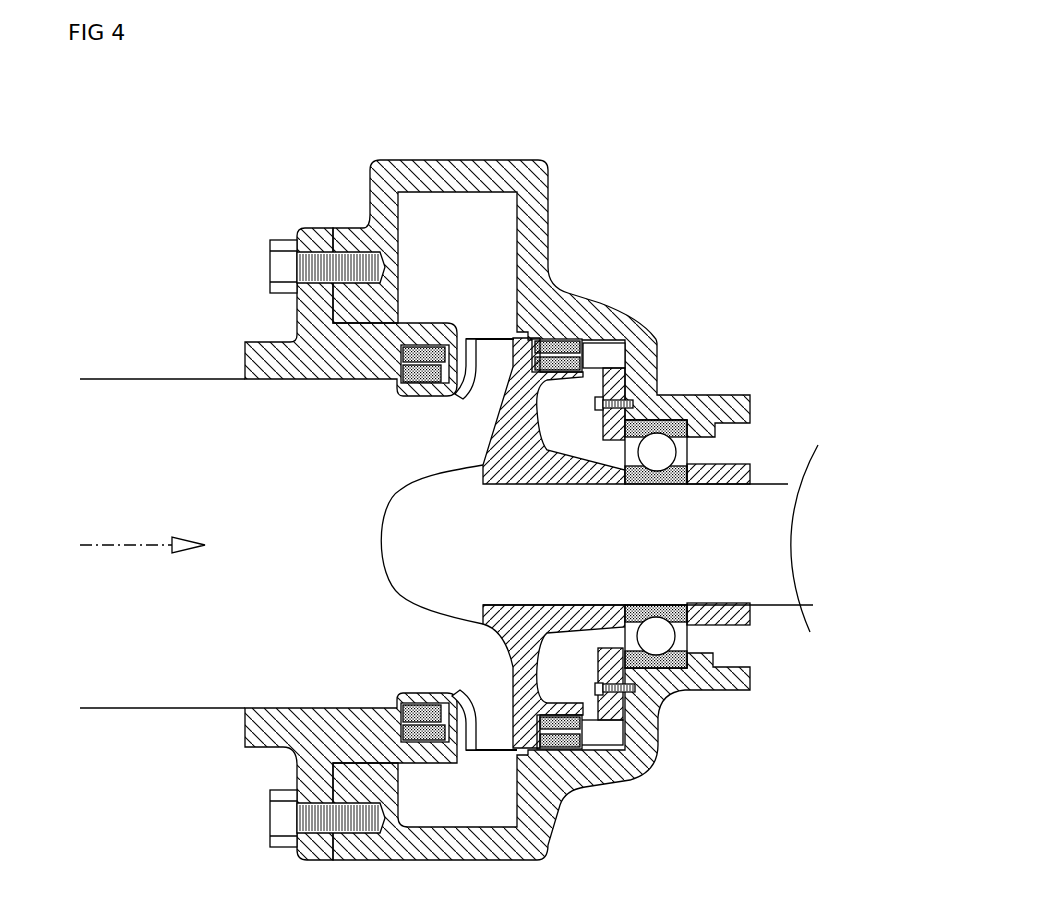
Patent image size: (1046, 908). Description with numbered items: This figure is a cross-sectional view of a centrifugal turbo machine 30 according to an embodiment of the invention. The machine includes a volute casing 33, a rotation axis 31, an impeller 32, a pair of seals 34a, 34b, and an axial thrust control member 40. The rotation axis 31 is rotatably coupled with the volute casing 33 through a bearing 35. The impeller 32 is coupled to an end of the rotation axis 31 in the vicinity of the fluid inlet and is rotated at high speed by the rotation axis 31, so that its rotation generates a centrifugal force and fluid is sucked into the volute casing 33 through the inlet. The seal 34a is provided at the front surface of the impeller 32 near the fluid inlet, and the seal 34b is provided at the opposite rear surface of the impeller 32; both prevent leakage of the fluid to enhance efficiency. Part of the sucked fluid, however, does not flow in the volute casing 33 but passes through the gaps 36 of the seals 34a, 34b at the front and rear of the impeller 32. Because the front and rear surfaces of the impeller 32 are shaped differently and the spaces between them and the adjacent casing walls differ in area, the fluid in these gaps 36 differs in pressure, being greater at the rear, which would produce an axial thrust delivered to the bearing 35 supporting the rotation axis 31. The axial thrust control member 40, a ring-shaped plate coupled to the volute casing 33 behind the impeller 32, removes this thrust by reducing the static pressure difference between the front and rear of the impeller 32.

The centrifugal turbo machine 30 is at (612, 210).
The rotation axis 31 is at (768, 543).
The impeller 32 is at (415, 396).
The volute casing 33 is at (465, 168).
The seal 34a is at (397, 381).
The seal 34b is at (570, 338).
The bearing 35 is at (700, 438).
The gaps 36 is at (485, 470).
The axial thrust control member 40 is at (640, 383).